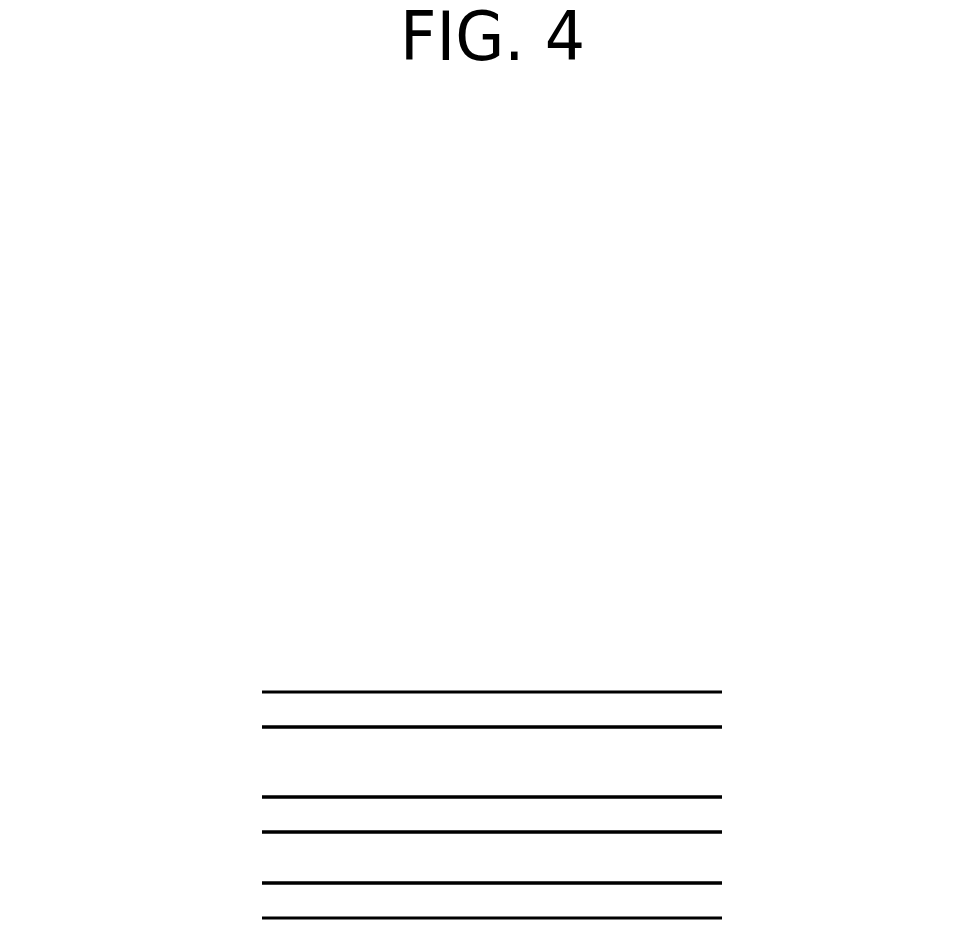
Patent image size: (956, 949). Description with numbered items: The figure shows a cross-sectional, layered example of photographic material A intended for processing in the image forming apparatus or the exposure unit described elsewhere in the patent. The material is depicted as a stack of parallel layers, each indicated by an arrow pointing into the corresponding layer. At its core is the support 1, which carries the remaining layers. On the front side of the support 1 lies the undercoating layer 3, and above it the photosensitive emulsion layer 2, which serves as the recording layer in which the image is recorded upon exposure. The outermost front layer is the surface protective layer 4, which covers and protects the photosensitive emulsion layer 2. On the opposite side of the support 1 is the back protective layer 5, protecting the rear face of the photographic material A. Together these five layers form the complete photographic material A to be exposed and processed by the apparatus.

The photographic material A is at (157, 677).
The support 1 is at (737, 863).
The photosensitive emulsion layer 2 is at (737, 778).
The undercoating layer 3 is at (737, 812).
The surface protective layer 4 is at (737, 707).
The back protective layer 5 is at (737, 899).